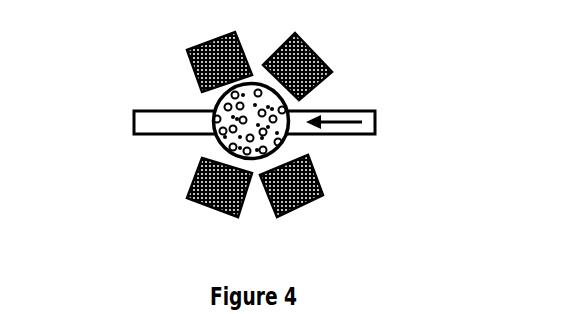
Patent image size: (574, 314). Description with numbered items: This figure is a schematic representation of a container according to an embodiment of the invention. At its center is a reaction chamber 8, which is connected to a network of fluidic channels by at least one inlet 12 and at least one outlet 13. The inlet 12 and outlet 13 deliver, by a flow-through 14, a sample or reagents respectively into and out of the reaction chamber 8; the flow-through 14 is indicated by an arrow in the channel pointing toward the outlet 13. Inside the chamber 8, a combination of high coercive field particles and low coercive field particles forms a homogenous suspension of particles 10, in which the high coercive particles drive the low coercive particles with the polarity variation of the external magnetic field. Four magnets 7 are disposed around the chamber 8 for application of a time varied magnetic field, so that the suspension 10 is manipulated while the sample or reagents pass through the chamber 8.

The magnets 7 is at (318, 53).
The reaction chamber 8 is at (222, 152).
The homogenous suspension of particles 10 is at (297, 147).
The inlet 12 is at (357, 112).
The outlet 13 is at (147, 110).
The flow-through 14 is at (362, 135).